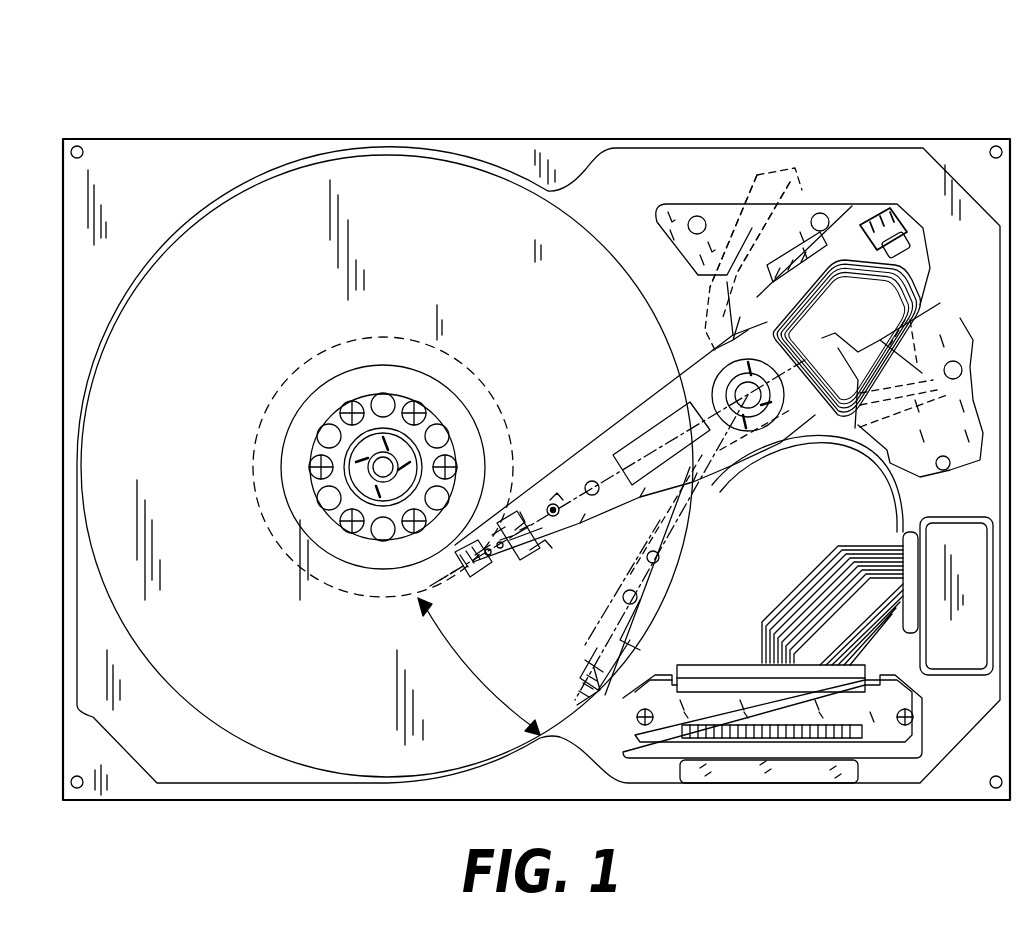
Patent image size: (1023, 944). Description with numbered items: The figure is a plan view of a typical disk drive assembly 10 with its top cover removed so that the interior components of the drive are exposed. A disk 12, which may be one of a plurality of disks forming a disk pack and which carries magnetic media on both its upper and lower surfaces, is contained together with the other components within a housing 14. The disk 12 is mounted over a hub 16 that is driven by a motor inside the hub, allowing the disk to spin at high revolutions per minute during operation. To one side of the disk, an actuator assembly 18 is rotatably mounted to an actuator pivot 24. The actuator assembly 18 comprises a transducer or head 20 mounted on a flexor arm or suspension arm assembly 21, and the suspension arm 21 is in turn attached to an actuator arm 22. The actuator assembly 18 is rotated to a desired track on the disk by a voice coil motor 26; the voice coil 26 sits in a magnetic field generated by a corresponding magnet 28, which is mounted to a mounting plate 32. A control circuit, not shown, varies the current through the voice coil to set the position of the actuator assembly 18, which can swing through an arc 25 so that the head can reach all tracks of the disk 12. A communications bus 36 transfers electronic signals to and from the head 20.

The disk drive assembly 10 is at (426, 126).
The disk 12 is at (232, 338).
The housing 14 is at (233, 137).
The hub 16 is at (315, 530).
The actuator assembly 18 is at (620, 434).
The head 20 is at (455, 578).
The suspension arm assembly 21 is at (620, 562).
The actuator arm 22 is at (577, 490).
The actuator pivot 24 is at (732, 393).
The arc 25 is at (458, 670).
The voice coil motor 26 is at (848, 226).
The magnet 28 is at (806, 214).
The mounting plate 32 is at (688, 275).
The communications bus 36 is at (837, 545).